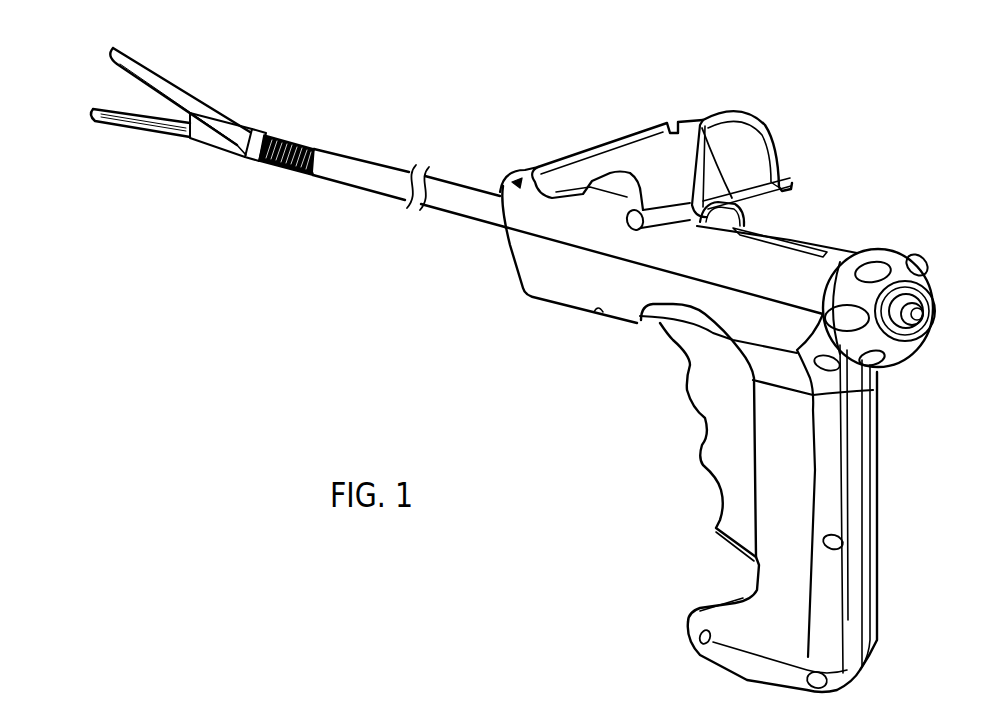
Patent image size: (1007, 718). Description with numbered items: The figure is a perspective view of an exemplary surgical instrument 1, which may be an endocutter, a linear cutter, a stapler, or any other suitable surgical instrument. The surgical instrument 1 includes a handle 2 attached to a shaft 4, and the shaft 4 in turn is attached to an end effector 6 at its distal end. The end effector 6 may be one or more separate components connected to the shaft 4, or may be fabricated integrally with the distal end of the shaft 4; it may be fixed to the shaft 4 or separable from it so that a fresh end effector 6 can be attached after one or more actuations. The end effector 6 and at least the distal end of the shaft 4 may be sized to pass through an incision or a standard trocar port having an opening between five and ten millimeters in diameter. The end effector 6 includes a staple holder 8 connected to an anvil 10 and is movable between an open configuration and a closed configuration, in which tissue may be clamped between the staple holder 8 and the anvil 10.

The surgical instrument 1 is at (318, 349).
The handle 2 is at (796, 79).
The shaft 4 is at (351, 140).
The end effector 6 is at (213, 50).
The staple holder 8 is at (142, 134).
The anvil 10 is at (192, 92).